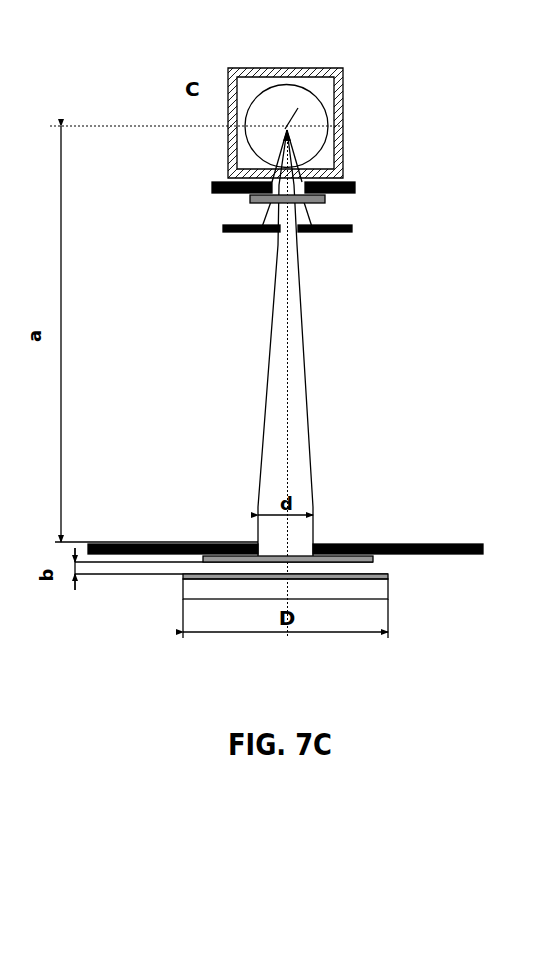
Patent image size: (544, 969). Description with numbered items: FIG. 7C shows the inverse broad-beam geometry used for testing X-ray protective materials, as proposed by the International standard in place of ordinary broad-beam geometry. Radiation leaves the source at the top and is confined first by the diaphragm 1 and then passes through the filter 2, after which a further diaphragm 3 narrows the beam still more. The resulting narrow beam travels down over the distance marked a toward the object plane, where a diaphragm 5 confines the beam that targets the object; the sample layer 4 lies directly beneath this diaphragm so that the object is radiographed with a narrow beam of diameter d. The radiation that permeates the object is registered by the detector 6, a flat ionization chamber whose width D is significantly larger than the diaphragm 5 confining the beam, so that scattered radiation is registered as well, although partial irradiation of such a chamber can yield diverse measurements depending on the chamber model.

The diaphragm 1 is at (355, 183).
The filter 2 is at (328, 203).
The diaphragm 3 is at (355, 232).
The sample layer 4 is at (376, 559).
The diaphragm 5 is at (484, 547).
The detector 6 is at (393, 578).